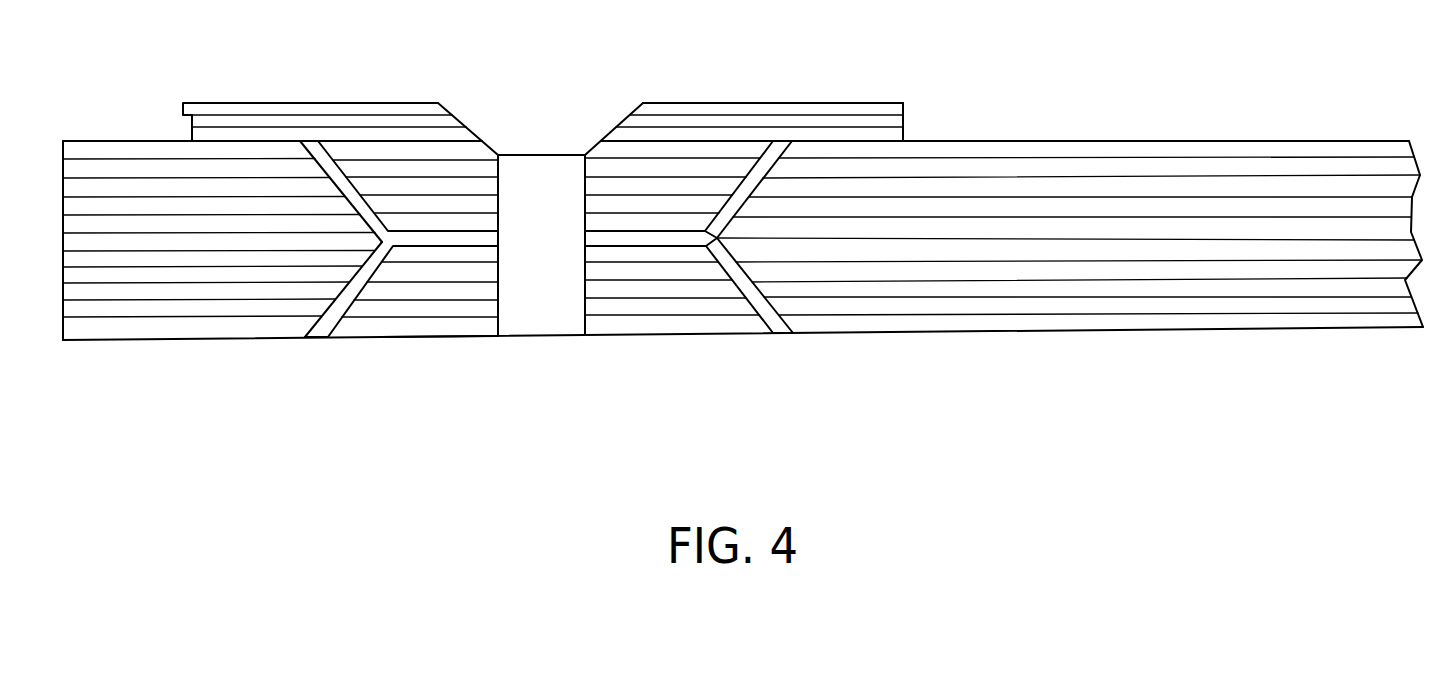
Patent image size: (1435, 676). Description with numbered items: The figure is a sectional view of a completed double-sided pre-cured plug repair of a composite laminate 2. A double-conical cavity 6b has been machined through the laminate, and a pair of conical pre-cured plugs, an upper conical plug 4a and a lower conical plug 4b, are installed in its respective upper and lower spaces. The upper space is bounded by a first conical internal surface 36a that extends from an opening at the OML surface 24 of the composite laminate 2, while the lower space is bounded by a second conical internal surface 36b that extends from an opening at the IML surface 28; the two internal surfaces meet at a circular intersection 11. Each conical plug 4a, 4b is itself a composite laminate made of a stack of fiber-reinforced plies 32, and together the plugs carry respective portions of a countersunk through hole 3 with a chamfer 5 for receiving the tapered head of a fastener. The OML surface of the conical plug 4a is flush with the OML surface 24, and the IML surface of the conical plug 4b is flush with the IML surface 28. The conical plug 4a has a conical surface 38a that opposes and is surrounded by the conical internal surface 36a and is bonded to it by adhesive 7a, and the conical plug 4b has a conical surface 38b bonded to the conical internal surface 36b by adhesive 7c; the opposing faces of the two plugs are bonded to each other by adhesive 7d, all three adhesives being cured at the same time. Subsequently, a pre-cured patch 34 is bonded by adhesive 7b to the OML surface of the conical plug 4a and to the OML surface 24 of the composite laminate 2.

The composite laminate 2 is at (101, 134).
The countersunk through hole 3 is at (530, 318).
The conical plug 4a is at (446, 345).
The conical plug 4b is at (409, 130).
The chamfer 5 is at (587, 120).
The double-conical cavity 6b is at (342, 216).
The adhesive 7a is at (330, 160).
The adhesive 7b is at (903, 132).
The adhesive 7c is at (318, 332).
The adhesive 7d is at (610, 240).
The circular intersection 11 is at (716, 262).
The OML surface 24 is at (1208, 140).
The IML surface 28 is at (1230, 328).
The fiber-reinforced plies 32 is at (283, 120).
The pre-cured patch 34 is at (825, 96).
The first conical internal surface 36a is at (786, 152).
The second conical internal surface 36b is at (755, 290).
The conical surface 38a is at (345, 168).
The conical surface 38b is at (363, 290).